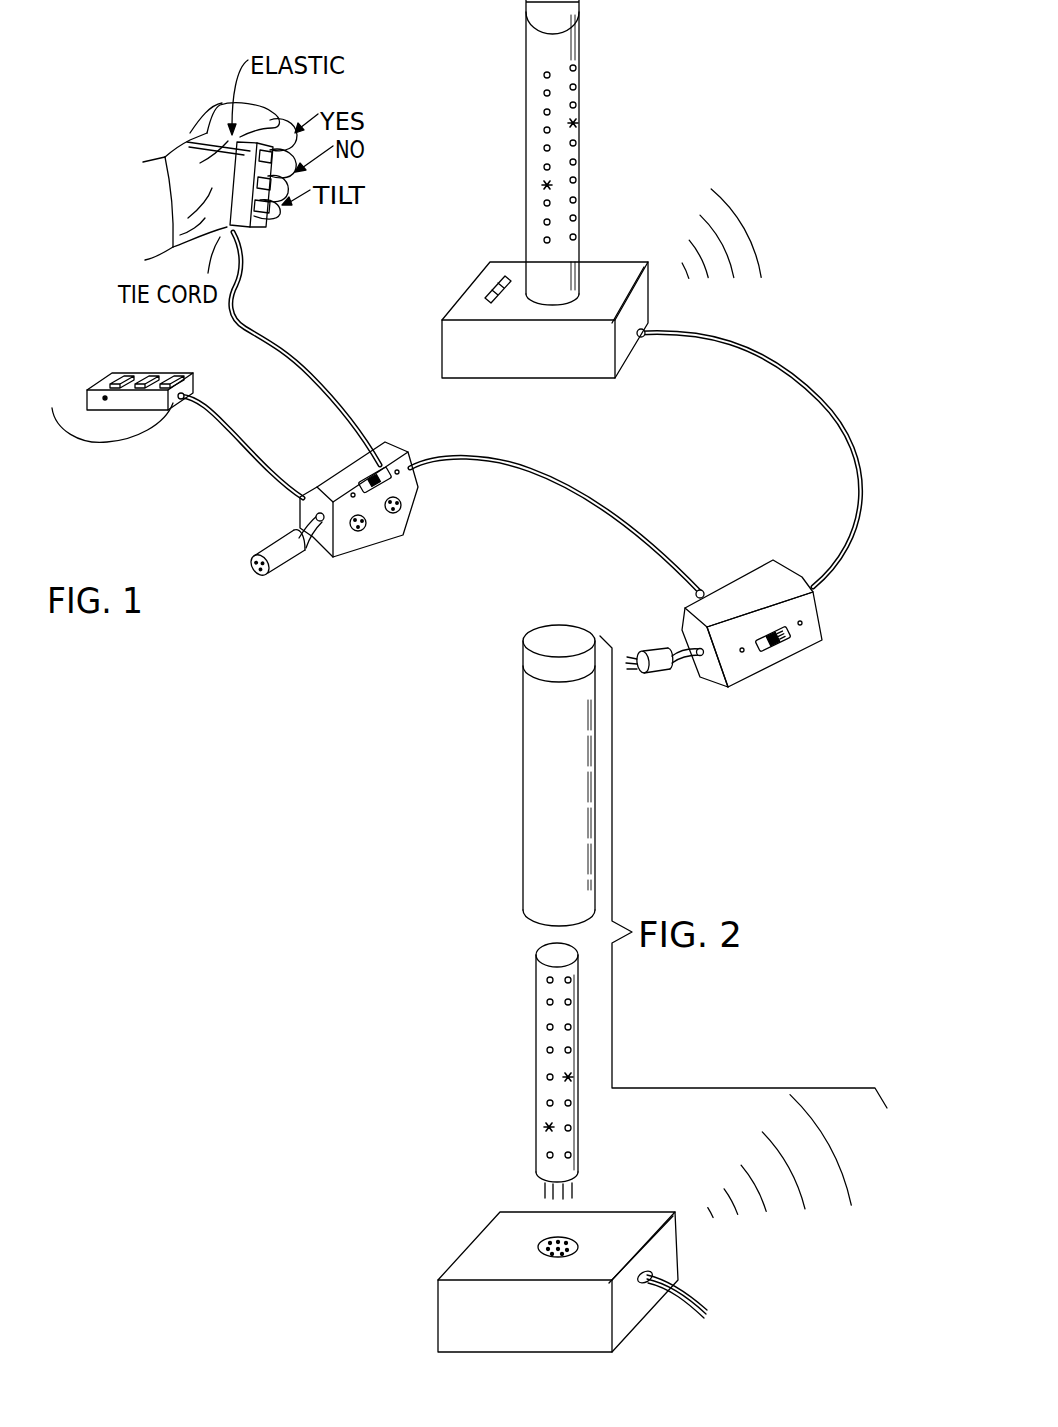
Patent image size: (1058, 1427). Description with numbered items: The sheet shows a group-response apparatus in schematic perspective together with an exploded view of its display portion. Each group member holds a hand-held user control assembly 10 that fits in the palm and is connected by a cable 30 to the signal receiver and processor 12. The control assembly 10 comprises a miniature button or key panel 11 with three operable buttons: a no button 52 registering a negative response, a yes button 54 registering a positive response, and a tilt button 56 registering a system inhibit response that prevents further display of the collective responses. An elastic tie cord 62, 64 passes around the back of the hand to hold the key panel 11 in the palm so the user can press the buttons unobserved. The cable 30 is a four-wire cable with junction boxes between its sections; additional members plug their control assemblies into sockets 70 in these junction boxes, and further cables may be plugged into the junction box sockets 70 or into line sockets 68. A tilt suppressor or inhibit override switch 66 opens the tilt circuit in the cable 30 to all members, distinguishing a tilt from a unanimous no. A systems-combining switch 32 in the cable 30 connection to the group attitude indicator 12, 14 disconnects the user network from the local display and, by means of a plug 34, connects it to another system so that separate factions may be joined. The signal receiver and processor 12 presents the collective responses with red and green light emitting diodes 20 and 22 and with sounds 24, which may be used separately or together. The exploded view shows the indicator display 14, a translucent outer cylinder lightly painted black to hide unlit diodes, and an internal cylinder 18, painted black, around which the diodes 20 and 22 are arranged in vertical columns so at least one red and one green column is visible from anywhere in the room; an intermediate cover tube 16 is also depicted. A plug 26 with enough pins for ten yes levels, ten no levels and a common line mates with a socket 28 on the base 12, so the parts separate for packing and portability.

In FIG. 1, the hand-held user control assembly 10 is at (141, 409).
In FIG. 1, the button or key panel 11 is at (102, 373).
In FIG. 1, the signal receiver and processor 12 is at (600, 262).
In FIG. 2, the signal receiver and processor 12 is at (678, 1240).
In FIG. 1, the indicator display 14 is at (578, 205).
In FIG. 2, the cover tube 16 is at (523, 778).
In FIG. 2, the internal cylinder 18 is at (537, 948).
In FIG. 1, the red light emitting diodes 20 is at (549, 184).
In FIG. 2, the red light emitting diodes 20 is at (545, 1127).
In FIG. 1, the green light emitting diodes 22 is at (575, 122).
In FIG. 2, the green light emitting diodes 22 is at (565, 1075).
In FIG. 1, the sounds 24 is at (748, 223).
In FIG. 2, the sounds 24 is at (835, 1142).
In FIG. 2, the plug 26 is at (540, 1190).
In FIG. 2, the socket 28 is at (578, 1237).
In FIG. 1, the cable 30 is at (320, 387).
In FIG. 2, the cable 30 is at (700, 1300).
In FIG. 1, the systems-combining switch 32 is at (823, 620).
In FIG. 1, the plug 34 is at (635, 650).
In FIG. 1, the no button 52 is at (148, 370).
In FIG. 1, the yes button 54 is at (127, 370).
In FIG. 1, the tilt button 56 is at (173, 370).
In FIG. 1, the elastic tie cord 62 is at (103, 443).
In FIG. 1, the elastic tie cord 64 is at (104, 397).
In FIG. 1, the tilt suppressor or inhibit override switch 66 is at (370, 467).
In FIG. 1, the line sockets 68 is at (288, 530).
In FIG. 1, the sockets 70 is at (403, 505).